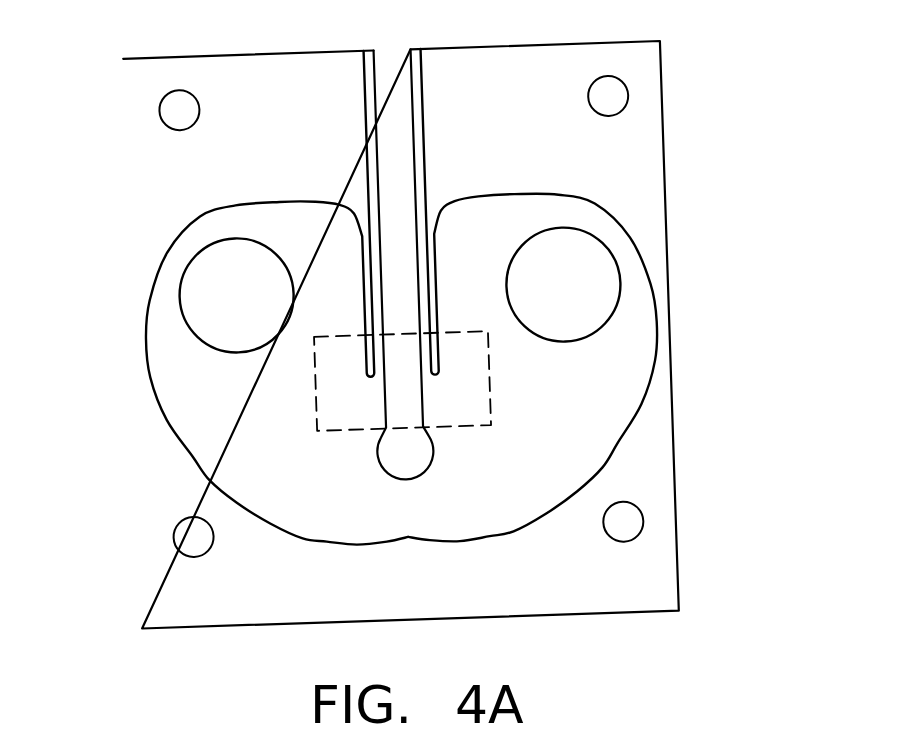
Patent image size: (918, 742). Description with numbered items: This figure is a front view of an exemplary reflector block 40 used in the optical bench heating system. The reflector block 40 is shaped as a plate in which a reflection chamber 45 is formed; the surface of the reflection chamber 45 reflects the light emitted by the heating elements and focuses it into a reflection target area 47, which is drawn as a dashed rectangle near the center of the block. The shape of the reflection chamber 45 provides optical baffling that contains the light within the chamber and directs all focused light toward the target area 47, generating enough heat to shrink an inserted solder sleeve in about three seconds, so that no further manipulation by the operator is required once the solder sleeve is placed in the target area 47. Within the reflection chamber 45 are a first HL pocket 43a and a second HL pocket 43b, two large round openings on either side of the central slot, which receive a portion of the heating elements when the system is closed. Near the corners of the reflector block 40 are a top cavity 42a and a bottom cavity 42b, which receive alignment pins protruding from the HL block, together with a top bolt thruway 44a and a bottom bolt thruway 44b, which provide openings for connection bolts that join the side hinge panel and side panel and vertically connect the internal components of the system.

The reflector block 40 is at (667, 172).
The top cavity 42a is at (602, 113).
The bottom cavity 42b is at (205, 523).
The first HL pocket 43a is at (237, 352).
The second HL pocket 43b is at (540, 335).
The top bolt thruway 44a is at (195, 122).
The bottom bolt thruway 44b is at (618, 542).
The reflection chamber 45 is at (600, 457).
The reflection target area 47 is at (343, 432).